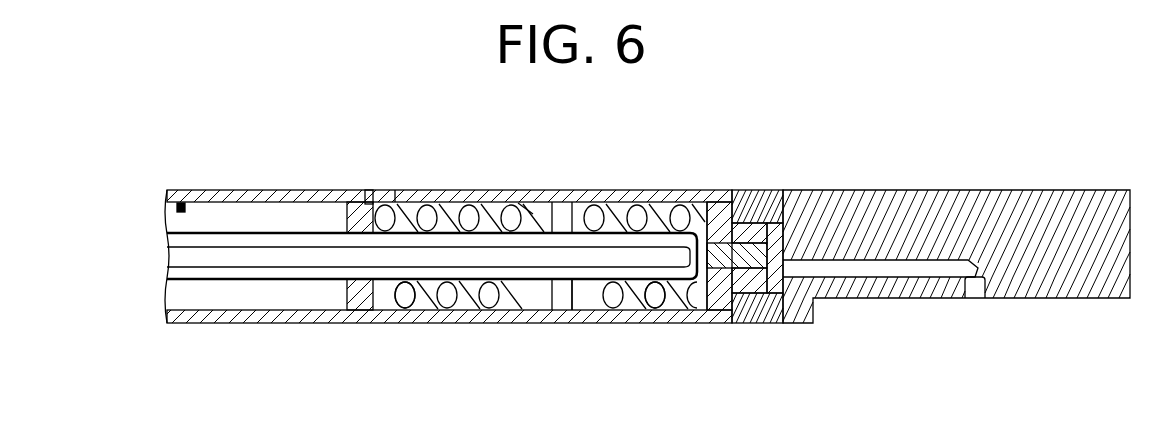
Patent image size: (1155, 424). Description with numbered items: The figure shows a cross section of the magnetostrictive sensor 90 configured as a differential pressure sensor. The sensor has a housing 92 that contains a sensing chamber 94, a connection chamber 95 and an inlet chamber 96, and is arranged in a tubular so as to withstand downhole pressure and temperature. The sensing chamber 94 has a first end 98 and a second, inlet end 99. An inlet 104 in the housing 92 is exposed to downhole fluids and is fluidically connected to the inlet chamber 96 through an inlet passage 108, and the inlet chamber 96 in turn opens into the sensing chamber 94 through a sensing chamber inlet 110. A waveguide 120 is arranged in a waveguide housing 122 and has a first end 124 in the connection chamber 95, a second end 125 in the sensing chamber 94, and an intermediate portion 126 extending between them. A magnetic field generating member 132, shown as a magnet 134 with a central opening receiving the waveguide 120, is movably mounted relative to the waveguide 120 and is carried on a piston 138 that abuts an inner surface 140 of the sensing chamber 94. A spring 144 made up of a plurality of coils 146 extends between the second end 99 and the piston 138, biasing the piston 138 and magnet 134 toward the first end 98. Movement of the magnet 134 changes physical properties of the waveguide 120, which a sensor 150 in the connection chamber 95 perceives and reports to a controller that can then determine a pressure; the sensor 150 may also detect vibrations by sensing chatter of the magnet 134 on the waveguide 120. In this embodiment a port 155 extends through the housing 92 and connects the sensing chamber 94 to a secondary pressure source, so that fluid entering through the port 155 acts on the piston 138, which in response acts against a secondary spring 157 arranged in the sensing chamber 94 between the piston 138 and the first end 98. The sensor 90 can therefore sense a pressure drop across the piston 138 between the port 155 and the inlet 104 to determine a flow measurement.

The magnetostrictive sensor 90 is at (538, 132).
The housing 92 is at (803, 188).
The sensing chamber 94 is at (706, 308).
The connection chamber 95 is at (282, 214).
The inlet chamber 96 is at (779, 300).
The first end 98 is at (698, 205).
The second end 99 is at (396, 210).
The inlet 104 is at (980, 302).
The inlet passage 108 is at (868, 252).
The sensing chamber inlet 110 is at (765, 207).
The waveguide 120 is at (622, 275).
The waveguide housing 122 is at (580, 217).
The first end 124 is at (173, 252).
The second end 125 is at (722, 242).
The intermediate portion 126 is at (378, 258).
The magnetic field generating member 132 is at (745, 292).
The magnet 134 is at (584, 297).
The piston 138 is at (532, 213).
The inner surface 140 is at (478, 208).
The spring 144 is at (465, 312).
The coils 146 is at (405, 297).
The sensor 150 is at (176, 208).
The port 155 is at (366, 190).
The secondary spring 157 is at (662, 300).